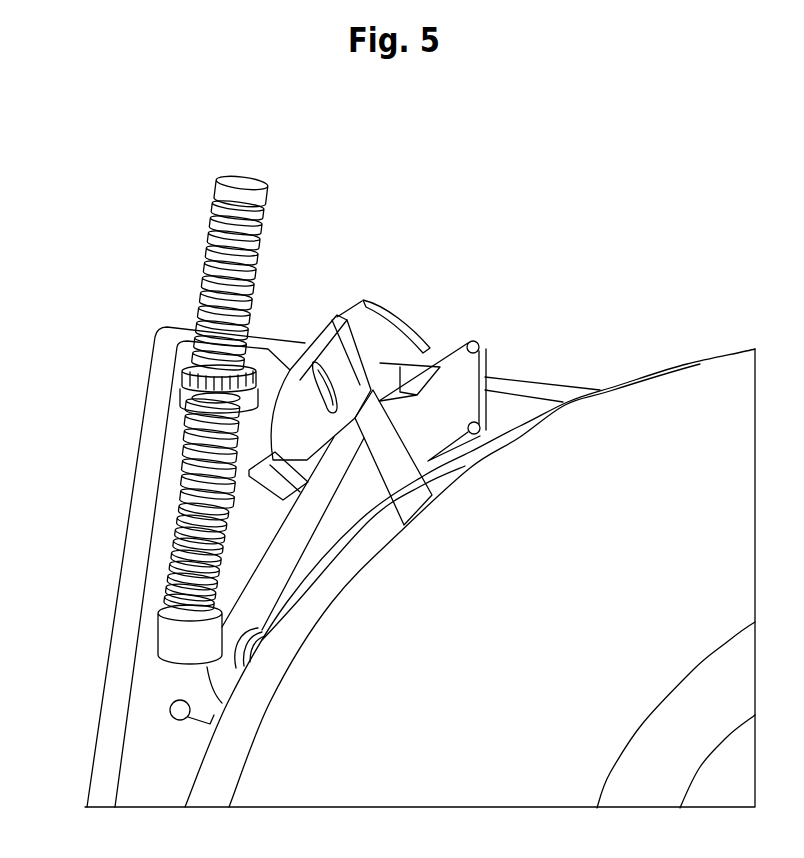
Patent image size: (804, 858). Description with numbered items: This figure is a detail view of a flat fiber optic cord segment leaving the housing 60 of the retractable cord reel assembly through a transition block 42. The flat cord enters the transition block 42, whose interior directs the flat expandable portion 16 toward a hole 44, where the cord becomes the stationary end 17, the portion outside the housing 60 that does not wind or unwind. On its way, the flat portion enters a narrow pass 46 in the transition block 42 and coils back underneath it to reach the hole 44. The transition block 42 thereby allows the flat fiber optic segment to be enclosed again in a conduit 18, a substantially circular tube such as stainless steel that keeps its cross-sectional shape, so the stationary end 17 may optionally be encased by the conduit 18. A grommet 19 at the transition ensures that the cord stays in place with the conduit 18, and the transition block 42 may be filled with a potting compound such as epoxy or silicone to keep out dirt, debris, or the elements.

The expandable portion 16 is at (385, 395).
The stationary end 17 is at (207, 248).
The conduit 18 is at (248, 237).
The grommet 19 is at (163, 648).
The transition block 42 is at (468, 380).
The hole 44 is at (192, 330).
The narrow pass 46 is at (368, 327).
The housing 60 is at (537, 380).